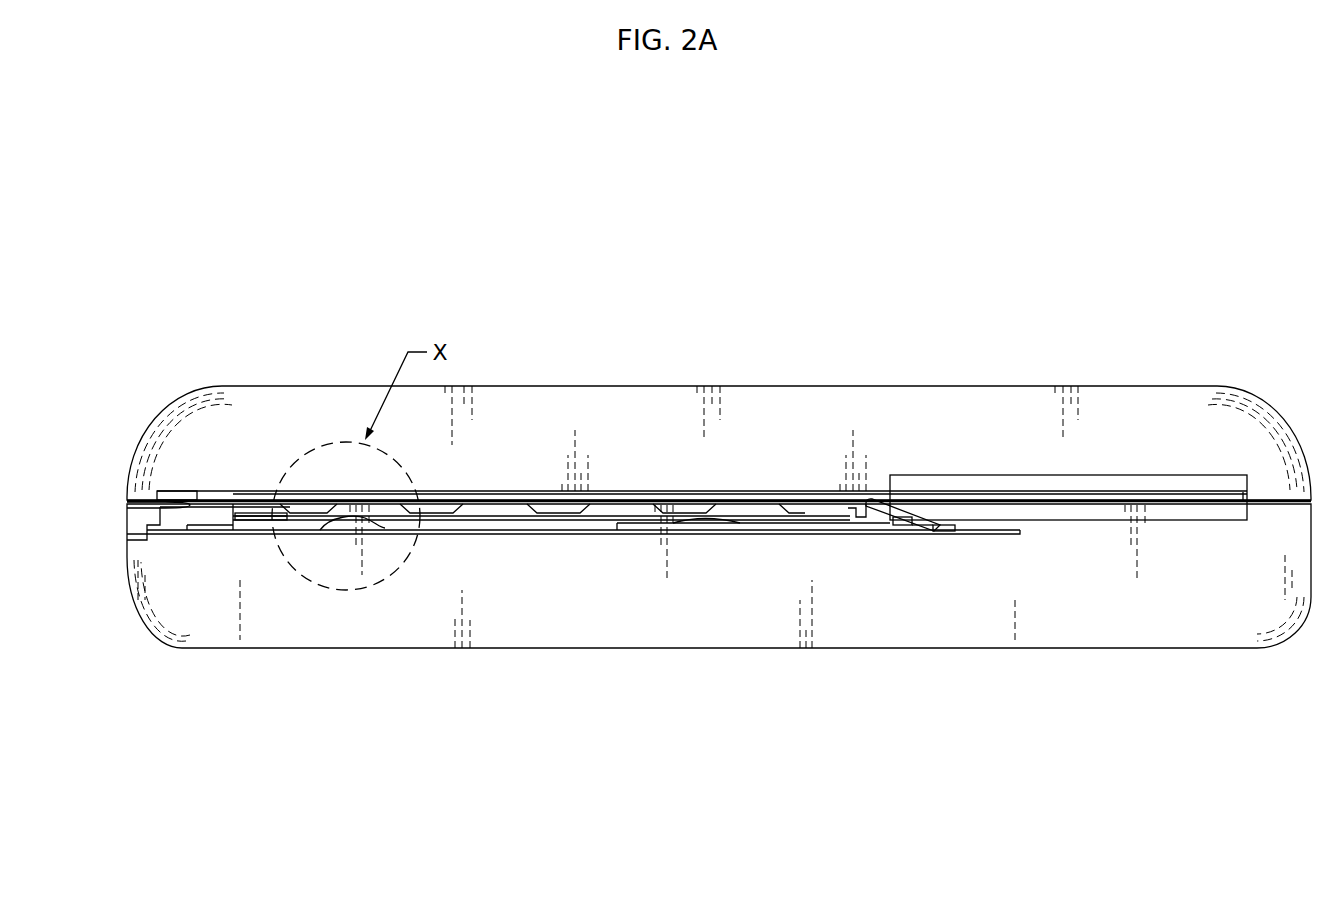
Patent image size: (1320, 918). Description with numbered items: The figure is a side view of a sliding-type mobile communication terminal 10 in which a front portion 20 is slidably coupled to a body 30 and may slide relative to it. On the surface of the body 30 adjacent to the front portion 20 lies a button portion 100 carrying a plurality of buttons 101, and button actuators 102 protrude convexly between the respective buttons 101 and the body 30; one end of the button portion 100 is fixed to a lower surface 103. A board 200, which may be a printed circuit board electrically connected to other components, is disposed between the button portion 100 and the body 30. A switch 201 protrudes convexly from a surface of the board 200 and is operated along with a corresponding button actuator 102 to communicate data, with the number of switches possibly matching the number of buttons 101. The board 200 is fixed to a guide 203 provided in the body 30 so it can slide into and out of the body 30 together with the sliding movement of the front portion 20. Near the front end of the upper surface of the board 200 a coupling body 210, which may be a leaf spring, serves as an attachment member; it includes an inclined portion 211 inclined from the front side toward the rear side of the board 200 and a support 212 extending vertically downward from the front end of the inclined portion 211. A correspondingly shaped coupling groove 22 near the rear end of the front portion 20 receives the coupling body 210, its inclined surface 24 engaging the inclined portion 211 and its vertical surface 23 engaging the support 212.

The mobile communication terminal 10 is at (1044, 298).
The front portion 20 is at (352, 386).
The coupling groove 22 is at (168, 494).
The vertical surface 23 is at (156, 493).
The inclined surface 24 is at (140, 501).
The body 30 is at (215, 648).
The button portion 100 is at (293, 503).
The buttons 101 is at (347, 510).
The button actuators 102 is at (383, 527).
The lower surface 103 is at (192, 529).
The board 200 is at (519, 531).
The switch 201 is at (320, 530).
The guide 203 is at (586, 534).
The coupling body 210 is at (880, 525).
The inclined portion 211 is at (910, 527).
The support 212 is at (850, 525).